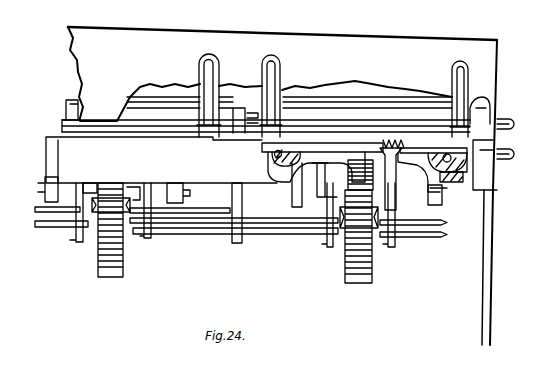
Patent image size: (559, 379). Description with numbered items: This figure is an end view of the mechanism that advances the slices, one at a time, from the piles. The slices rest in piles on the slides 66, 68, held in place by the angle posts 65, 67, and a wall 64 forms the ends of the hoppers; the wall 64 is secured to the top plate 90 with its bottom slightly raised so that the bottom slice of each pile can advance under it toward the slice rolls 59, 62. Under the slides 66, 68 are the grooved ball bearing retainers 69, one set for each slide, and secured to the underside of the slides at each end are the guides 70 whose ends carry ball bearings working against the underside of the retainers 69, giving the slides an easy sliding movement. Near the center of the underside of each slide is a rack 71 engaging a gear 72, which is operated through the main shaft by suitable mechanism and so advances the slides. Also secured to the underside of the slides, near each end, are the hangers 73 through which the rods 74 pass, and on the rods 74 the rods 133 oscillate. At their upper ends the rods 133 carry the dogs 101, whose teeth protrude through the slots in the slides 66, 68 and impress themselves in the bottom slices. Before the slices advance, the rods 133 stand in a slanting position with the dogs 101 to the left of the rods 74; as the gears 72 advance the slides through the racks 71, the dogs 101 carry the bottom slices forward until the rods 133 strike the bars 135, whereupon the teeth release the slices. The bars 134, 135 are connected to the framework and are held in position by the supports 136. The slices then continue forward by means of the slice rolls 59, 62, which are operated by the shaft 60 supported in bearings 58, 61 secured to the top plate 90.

The bearing 58 is at (480, 97).
The slice roll 59 is at (385, 121).
The shaft 60 is at (512, 124).
The bearing 61 is at (239, 108).
The slice roll 62 is at (175, 113).
The wall 64 is at (282, 186).
The angle post 65 is at (280, 78).
The slide 66 is at (300, 124).
The angle post 67 is at (199, 74).
The slide 68 is at (132, 140).
The ball bearing retainer 69 is at (272, 160).
The guide 70 is at (364, 167).
The rack 71 is at (359, 174).
The gear 72 is at (123, 263).
The hanger 73 is at (58, 158).
The rod 74 is at (195, 193).
The top plate 90 is at (501, 182).
The dog 101 is at (405, 128).
The rod 133 is at (241, 224).
The bar 134 is at (246, 233).
The bar 135 is at (451, 233).
The support 136 is at (248, 220).